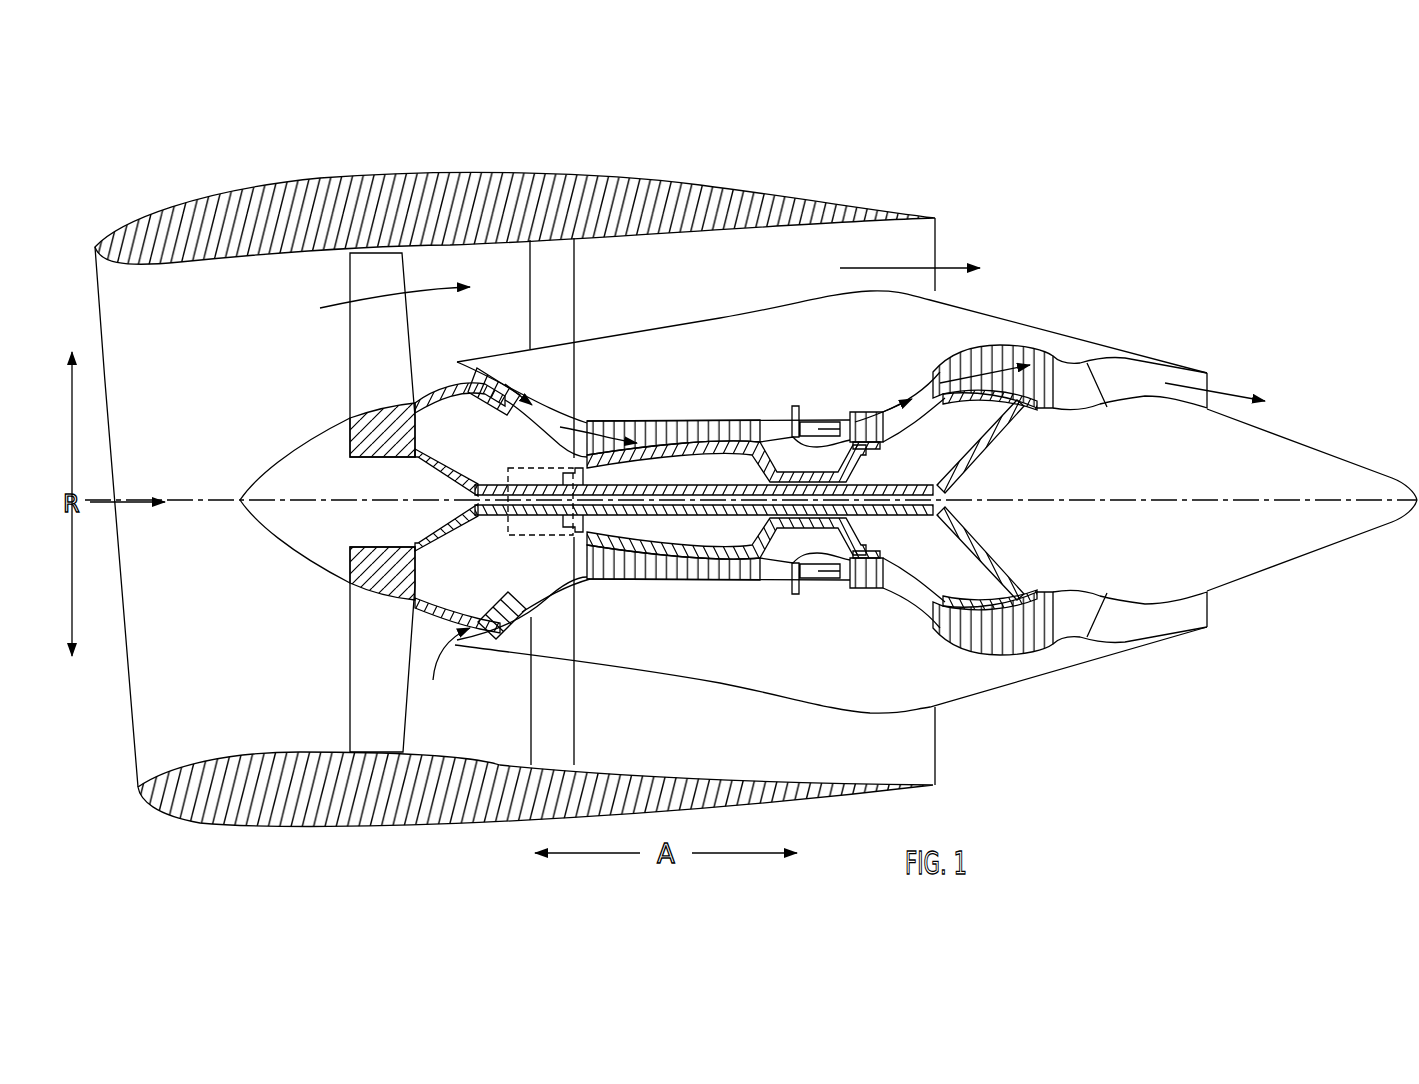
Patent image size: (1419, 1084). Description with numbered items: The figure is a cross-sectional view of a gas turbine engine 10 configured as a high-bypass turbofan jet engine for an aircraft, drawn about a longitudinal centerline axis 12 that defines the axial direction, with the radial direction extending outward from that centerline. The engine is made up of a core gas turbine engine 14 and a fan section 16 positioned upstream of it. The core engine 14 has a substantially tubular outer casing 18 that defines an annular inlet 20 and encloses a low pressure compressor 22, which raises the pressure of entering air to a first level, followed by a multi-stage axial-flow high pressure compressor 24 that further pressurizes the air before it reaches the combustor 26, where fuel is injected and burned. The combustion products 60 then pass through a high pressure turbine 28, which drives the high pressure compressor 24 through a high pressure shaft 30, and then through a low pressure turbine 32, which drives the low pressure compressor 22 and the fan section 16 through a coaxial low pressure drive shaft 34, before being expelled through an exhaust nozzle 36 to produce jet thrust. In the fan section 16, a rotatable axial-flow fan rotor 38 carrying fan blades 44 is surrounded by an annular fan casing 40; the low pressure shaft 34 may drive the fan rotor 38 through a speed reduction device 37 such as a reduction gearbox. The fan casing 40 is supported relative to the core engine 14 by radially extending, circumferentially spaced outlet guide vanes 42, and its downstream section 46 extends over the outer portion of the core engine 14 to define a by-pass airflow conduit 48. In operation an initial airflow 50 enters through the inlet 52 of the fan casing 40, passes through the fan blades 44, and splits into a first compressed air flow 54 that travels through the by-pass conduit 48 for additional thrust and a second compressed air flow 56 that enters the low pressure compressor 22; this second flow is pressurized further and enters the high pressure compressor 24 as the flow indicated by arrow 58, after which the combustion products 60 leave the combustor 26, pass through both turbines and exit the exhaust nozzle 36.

The gas turbine engine 10 is at (1118, 203).
The longitudinal centerline axis 12 is at (1100, 498).
The core gas turbine engine 14 is at (818, 368).
The fan section 16 is at (395, 165).
The outer casing 18 is at (753, 697).
The annular inlet 20 is at (445, 669).
The low pressure compressor 22 is at (530, 600).
The high pressure compressor 24 is at (610, 573).
The combustor 26 is at (817, 580).
The high pressure turbine 28 is at (898, 588).
The high pressure shaft 30 is at (813, 472).
The low pressure turbine 32 is at (1023, 659).
The low pressure drive shaft 34 is at (523, 483).
The exhaust nozzle 36 is at (1207, 378).
The speed reduction device 37 is at (543, 465).
The fan rotor 38 is at (415, 458).
The fan casing 40 is at (442, 830).
The outlet guide vanes 42 is at (575, 266).
The fan blades 44 is at (348, 698).
The downstream section 46 is at (781, 198).
The by-pass airflow conduit 48 is at (728, 269).
The initial airflow 50 is at (128, 500).
The inlet 52 is at (132, 747).
The first compressed air flow 54 is at (368, 300).
The second compressed air flow 56 is at (437, 377).
The air flow into HP compressor 58 is at (598, 423).
The combustion products 60 is at (868, 405).